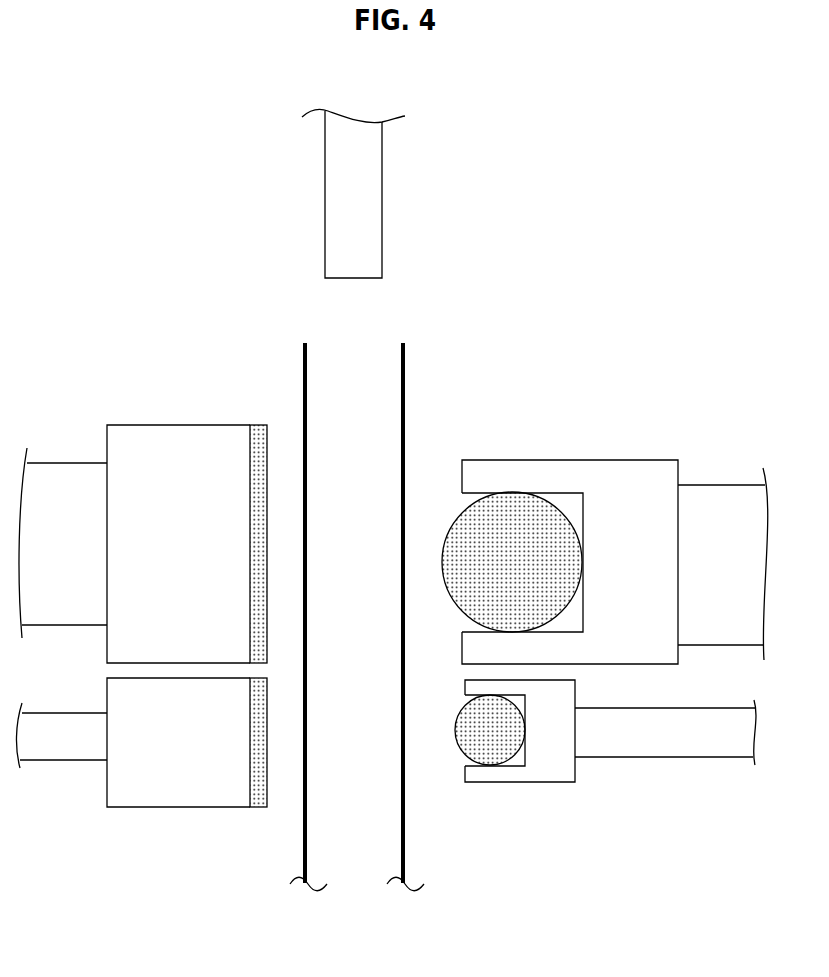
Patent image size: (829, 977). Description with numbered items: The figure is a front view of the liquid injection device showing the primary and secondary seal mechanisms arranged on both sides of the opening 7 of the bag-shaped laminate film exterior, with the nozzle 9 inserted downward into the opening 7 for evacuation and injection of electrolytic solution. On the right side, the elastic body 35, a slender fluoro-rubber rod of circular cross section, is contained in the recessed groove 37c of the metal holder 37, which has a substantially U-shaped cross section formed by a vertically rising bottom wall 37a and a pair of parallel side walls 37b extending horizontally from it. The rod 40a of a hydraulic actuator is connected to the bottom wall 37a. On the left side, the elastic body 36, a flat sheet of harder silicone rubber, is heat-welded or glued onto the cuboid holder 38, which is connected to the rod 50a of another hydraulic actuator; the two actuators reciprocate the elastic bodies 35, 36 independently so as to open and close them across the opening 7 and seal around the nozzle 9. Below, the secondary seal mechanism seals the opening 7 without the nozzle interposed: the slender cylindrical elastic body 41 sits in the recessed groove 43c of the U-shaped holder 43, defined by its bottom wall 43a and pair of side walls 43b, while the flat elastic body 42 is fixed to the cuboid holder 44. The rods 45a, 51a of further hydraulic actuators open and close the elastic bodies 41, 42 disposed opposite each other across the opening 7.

The opening 7 is at (368, 340).
The nozzle 9 is at (382, 160).
The elastic body 35 is at (505, 522).
The elastic body 36 is at (258, 428).
The holder 37 is at (556, 494).
The bottom wall 37a is at (648, 475).
The side walls 37b is at (555, 652).
The recessed groove 37c is at (470, 494).
The holder 38 is at (186, 448).
The rod 40a is at (735, 495).
The elastic body 41 is at (473, 750).
The elastic body 42 is at (260, 808).
The holder 43 is at (533, 777).
The bottom wall 43a is at (562, 735).
The side walls 43b is at (498, 685).
The recessed groove 43c is at (467, 696).
The holder 44 is at (152, 795).
The rod 45a is at (713, 746).
The rod 50a is at (66, 491).
The rod 51a is at (63, 743).